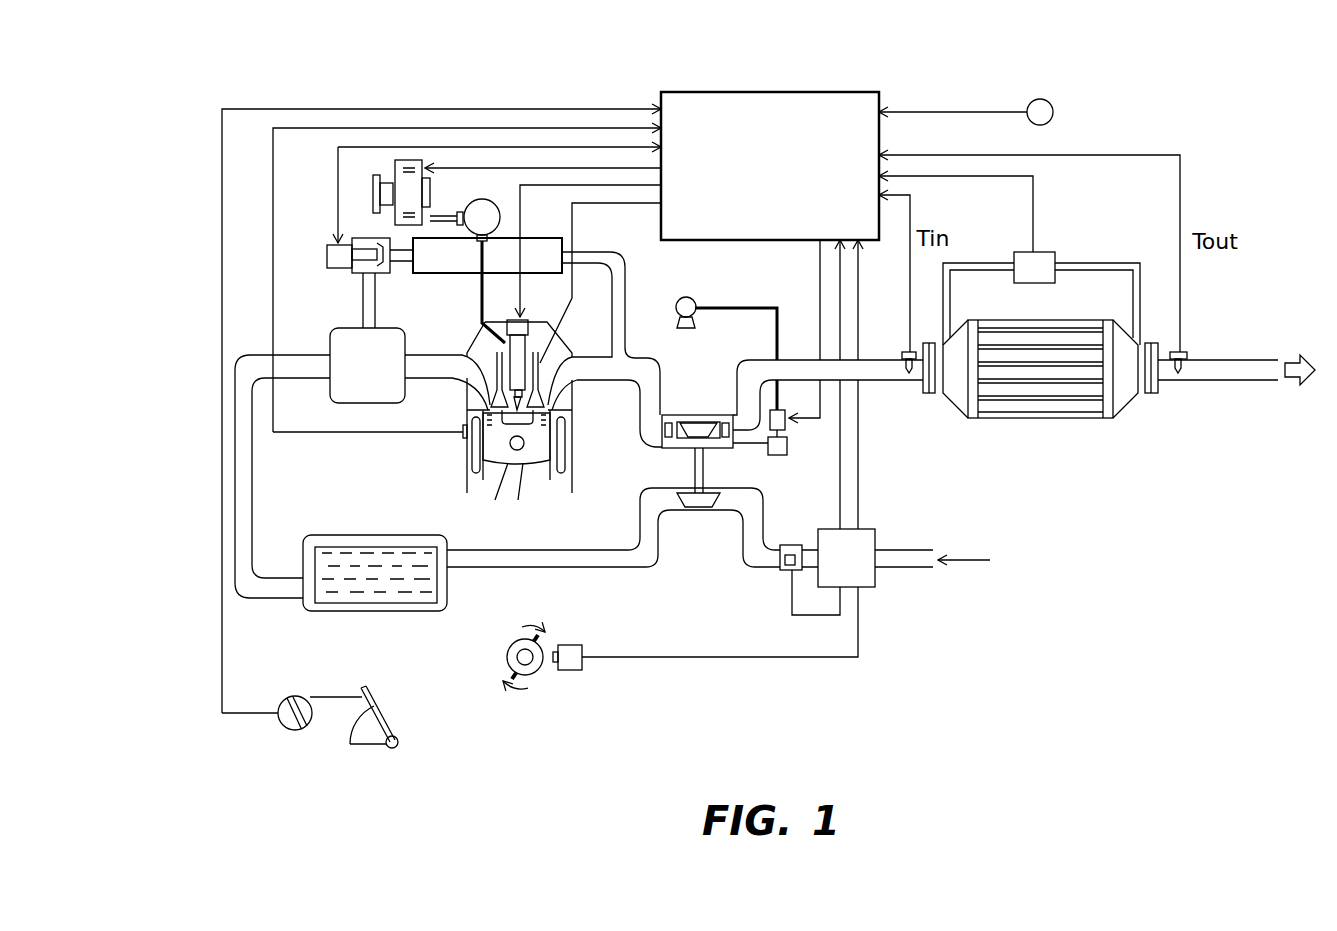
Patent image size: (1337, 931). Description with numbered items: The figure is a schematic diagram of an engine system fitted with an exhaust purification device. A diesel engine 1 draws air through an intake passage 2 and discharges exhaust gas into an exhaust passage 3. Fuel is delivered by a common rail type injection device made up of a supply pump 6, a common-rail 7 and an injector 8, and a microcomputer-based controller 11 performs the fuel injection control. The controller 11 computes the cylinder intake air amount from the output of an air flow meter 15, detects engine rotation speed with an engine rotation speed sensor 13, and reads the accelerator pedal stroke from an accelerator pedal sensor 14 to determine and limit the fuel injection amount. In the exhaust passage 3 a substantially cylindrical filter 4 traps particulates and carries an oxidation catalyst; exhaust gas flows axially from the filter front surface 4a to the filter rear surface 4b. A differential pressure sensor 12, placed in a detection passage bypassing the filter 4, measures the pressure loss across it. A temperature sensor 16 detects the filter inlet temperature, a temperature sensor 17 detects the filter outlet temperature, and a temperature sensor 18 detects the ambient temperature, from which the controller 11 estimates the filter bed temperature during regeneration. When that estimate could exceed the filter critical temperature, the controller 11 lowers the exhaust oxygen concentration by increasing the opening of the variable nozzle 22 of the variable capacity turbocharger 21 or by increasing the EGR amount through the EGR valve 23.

The diesel engine 1 is at (583, 399).
The intake passage 2 is at (440, 370).
The exhaust passage 3 is at (650, 378).
The filter 4 is at (1028, 420).
The filter front surface 4a is at (975, 398).
The filter rear surface 4b is at (1108, 419).
The supply pump 6 is at (412, 160).
The common-rail 7 is at (488, 207).
The injector 8 is at (528, 322).
The controller 11 is at (832, 100).
The differential pressure sensor 12 is at (1049, 250).
The engine rotation speed sensor 13 is at (568, 671).
The accelerator pedal sensor 14 is at (280, 726).
The air flow meter 15 is at (790, 545).
The temperature sensor 16 is at (905, 352).
The temperature sensor 17 is at (1190, 352).
The temperature sensor 18 is at (1055, 108).
The variable capacity turbocharger 21 is at (695, 519).
The variable nozzle 22 is at (668, 436).
The EGR valve 23 is at (385, 270).